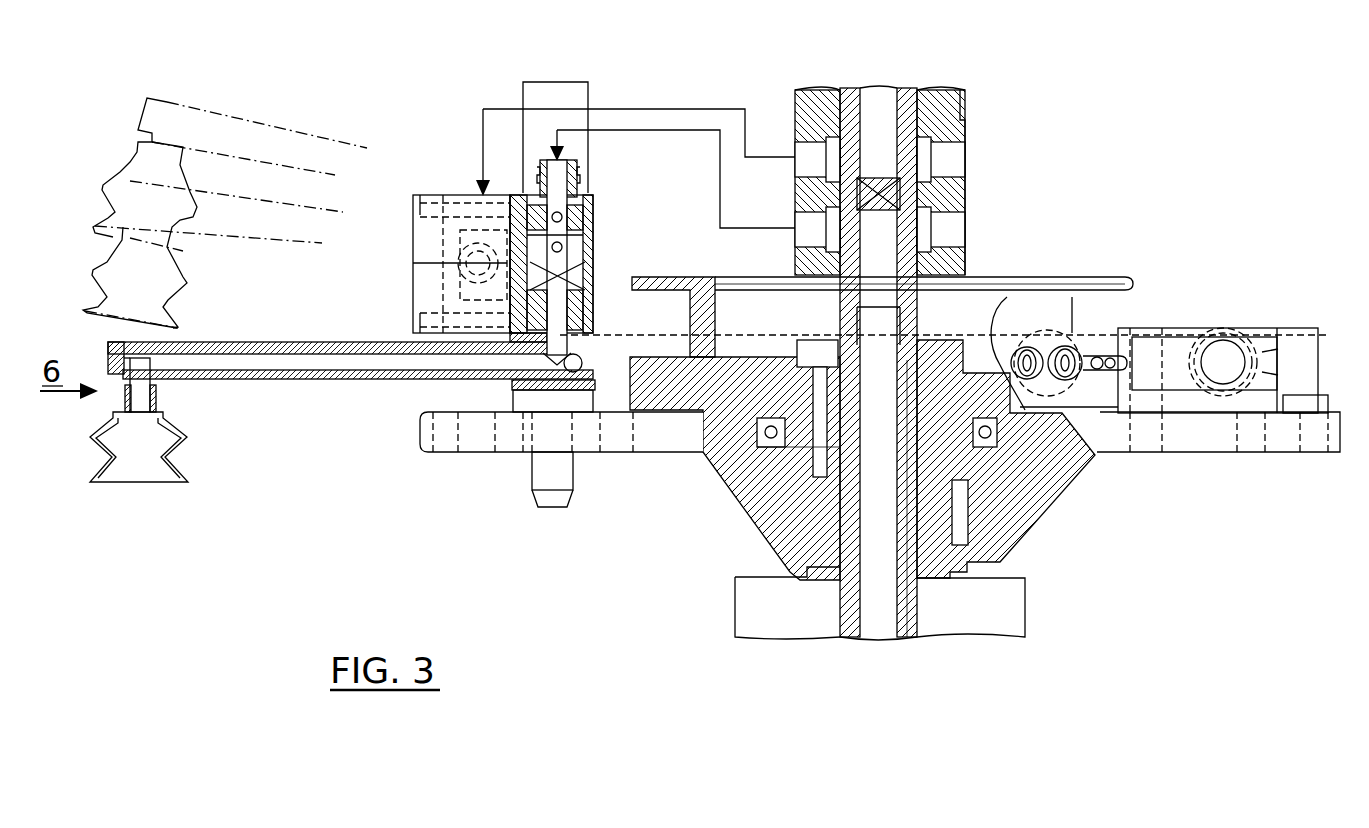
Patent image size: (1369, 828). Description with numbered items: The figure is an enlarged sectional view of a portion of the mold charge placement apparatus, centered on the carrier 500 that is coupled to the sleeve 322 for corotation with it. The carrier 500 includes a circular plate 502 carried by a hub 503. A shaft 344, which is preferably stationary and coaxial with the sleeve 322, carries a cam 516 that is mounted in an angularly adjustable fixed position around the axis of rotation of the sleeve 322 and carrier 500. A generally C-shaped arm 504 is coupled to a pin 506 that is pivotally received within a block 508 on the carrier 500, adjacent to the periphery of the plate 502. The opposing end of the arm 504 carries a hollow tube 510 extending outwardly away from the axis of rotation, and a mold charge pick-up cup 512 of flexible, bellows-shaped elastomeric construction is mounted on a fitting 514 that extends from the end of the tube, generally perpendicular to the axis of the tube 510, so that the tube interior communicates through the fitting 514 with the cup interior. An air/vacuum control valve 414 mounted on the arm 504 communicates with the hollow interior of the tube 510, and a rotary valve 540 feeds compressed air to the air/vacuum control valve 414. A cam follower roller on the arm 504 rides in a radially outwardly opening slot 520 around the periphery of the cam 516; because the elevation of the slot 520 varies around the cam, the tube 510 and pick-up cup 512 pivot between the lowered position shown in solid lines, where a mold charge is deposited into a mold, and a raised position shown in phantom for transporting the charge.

The hollow tube 510 is at (313, 342).
The arm 504 is at (348, 386).
The fitting 514 is at (155, 380).
The mold charge pick-up cup 512 is at (185, 437).
The air/vacuum control valve 414 is at (604, 190).
The slot 520 is at (658, 297).
The cam 516 is at (1105, 271).
The carrier 500 is at (728, 527).
The rotary valve 540 is at (975, 118).
The shaft 344 is at (905, 632).
The hub 503 is at (1017, 497).
The sleeve 322 is at (920, 612).
The circular plate 502 is at (1210, 452).
The block 508 is at (1262, 330).
The pin 506 is at (1222, 362).